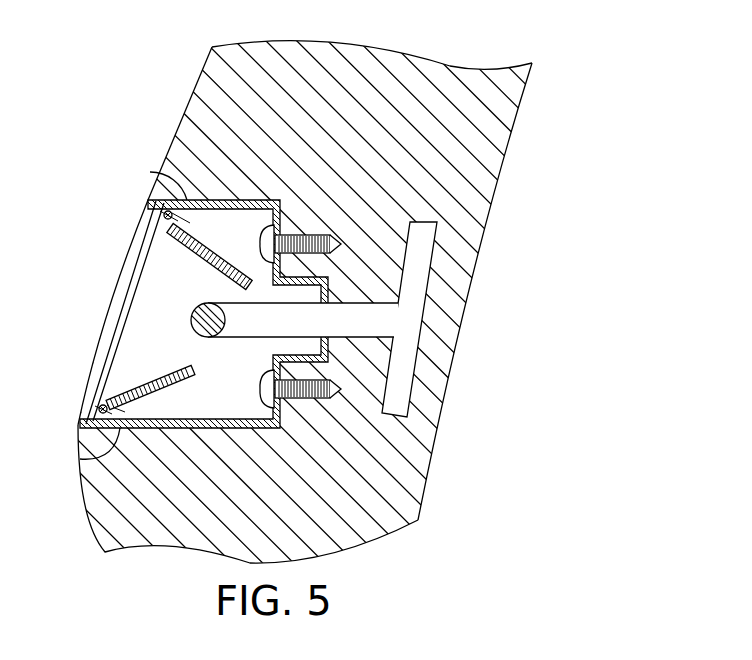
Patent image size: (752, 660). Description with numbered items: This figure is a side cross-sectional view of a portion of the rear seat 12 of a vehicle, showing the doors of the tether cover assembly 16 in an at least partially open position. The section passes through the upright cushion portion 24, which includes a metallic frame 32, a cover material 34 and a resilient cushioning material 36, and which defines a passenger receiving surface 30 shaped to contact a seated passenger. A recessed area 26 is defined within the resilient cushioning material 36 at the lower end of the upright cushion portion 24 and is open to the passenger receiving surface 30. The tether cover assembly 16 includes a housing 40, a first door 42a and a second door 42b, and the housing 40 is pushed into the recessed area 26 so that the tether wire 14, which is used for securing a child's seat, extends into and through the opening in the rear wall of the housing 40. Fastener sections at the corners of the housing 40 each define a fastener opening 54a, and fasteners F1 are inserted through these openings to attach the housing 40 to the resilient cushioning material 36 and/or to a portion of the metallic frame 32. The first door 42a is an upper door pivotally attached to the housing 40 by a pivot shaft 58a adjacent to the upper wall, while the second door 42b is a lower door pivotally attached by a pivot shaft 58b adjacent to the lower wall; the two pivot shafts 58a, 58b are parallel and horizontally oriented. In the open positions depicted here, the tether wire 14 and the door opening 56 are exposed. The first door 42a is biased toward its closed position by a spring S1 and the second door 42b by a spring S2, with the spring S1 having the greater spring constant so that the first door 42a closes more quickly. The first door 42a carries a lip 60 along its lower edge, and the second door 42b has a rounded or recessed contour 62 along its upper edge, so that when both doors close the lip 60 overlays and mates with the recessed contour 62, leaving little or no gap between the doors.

The rear seat 12 is at (376, 330).
The tether wire 14 is at (355, 322).
The tether cover assembly 16 is at (262, 201).
The upright cushion portion 24 is at (500, 164).
The recessed area 26 is at (238, 208).
The passenger receiving surface 30 is at (198, 82).
The metallic frame 32 is at (420, 252).
The cover material 34 is at (92, 528).
The resilient cushioning material 36 is at (337, 97).
The housing 40 is at (204, 276).
The first door 42a is at (218, 270).
The second door 42b is at (160, 385).
The fastener opening 54a is at (282, 396).
The door opening 56 is at (130, 304).
The pivot shaft 58a is at (160, 213).
The pivot shaft 58b is at (98, 409).
The lip 60 is at (249, 287).
The recessed contour 62 is at (198, 367).
The fastener F1 is at (261, 243).
The spring S1 is at (150, 172).
The spring S2 is at (80, 459).